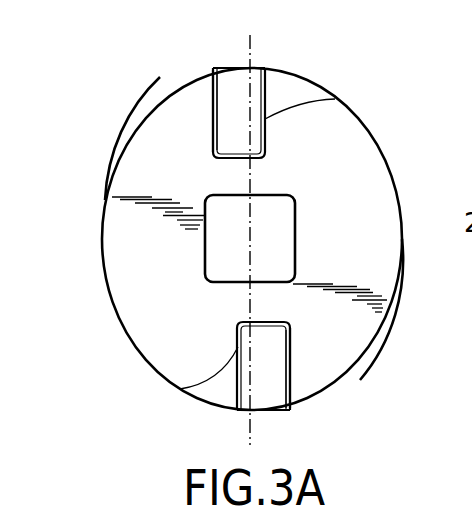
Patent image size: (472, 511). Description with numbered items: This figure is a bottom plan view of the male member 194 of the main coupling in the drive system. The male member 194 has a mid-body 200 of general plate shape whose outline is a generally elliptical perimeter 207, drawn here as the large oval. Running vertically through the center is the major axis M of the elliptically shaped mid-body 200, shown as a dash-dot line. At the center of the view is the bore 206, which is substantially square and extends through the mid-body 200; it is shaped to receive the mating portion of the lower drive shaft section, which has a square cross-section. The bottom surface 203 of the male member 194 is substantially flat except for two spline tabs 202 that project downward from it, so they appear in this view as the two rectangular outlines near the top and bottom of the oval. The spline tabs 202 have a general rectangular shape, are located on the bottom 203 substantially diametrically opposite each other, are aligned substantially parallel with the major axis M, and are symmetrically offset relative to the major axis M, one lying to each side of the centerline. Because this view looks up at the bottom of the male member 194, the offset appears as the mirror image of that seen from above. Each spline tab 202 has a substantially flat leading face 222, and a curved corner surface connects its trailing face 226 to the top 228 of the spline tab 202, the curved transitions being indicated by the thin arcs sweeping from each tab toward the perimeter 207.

The male member 194 is at (138, 125).
The mid-body 200 is at (390, 173).
The spline tabs 202 is at (266, 71).
The bottom surface 203 is at (379, 248).
The bore 206 is at (267, 205).
The elliptical perimeter 207 is at (393, 297).
The leading face 222 is at (214, 121).
The trailing face 226 is at (335, 99).
The top 228 is at (227, 80).
The major axis M is at (256, 48).